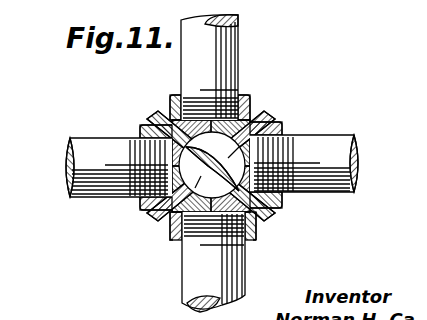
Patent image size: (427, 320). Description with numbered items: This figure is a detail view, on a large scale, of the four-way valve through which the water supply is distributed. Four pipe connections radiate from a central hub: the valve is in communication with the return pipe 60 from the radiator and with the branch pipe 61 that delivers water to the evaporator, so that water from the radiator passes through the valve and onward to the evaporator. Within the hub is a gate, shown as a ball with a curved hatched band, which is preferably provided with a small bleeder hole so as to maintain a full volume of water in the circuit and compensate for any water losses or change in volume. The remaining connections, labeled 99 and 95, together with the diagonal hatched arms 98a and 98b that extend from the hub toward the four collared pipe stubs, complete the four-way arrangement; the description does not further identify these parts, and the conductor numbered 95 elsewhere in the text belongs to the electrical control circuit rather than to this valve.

The shaft 99 is at (288, 49).
The branch pipe 61 is at (88, 130).
The conductor 95 is at (372, 126).
The return pipe 60 is at (186, 264).
The hub arm 98a is at (256, 126).
The ball joint band 98b is at (176, 209).